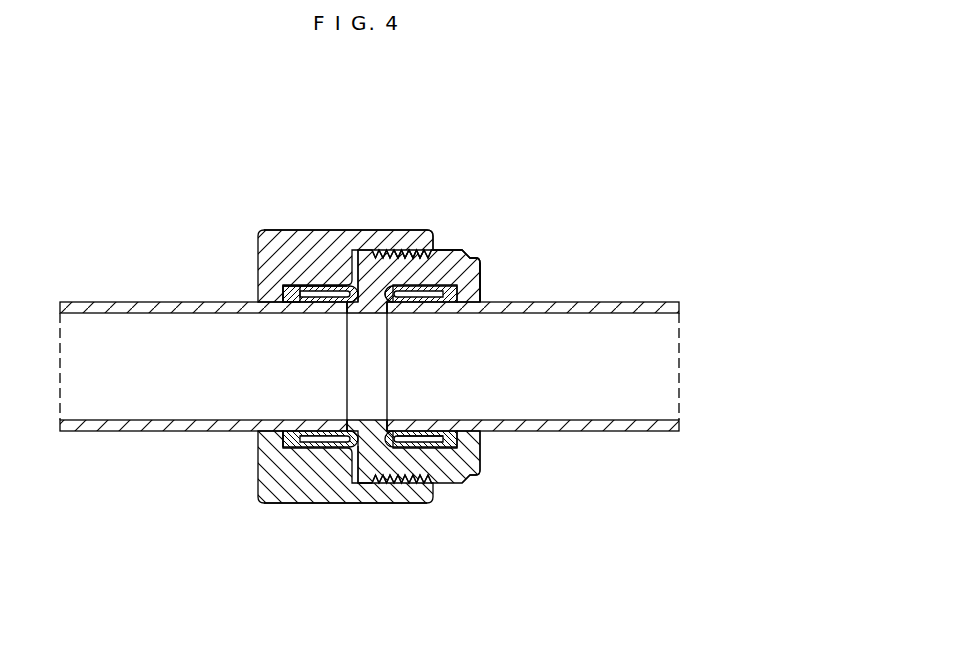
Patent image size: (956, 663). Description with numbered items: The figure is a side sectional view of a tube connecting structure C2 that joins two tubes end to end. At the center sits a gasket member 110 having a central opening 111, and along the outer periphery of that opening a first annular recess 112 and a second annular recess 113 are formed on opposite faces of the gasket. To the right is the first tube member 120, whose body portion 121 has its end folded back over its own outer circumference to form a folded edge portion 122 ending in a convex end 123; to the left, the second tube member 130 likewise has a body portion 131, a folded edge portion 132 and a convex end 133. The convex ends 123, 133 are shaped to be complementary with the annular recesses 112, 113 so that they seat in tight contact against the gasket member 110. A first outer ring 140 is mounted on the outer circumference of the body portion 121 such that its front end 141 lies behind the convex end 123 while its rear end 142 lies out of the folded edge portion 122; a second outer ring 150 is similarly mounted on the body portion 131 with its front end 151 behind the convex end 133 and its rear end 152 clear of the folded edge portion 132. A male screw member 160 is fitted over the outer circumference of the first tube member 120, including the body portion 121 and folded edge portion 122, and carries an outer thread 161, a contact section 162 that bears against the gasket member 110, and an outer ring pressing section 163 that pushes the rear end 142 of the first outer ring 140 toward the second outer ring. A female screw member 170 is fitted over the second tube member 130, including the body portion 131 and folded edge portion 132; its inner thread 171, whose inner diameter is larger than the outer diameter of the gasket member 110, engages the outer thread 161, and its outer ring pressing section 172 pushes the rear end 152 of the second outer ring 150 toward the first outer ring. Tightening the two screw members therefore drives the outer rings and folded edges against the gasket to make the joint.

The gasket member 110 is at (368, 246).
The central opening 111 is at (372, 362).
The first annular recess 112 is at (432, 248).
The second annular recess 113 is at (283, 501).
The first tube member 120 is at (665, 301).
The body portion 121 is at (593, 431).
The folded edge portion 122 is at (412, 447).
The convex end 123 is at (372, 421).
The second tube member 130 is at (122, 301).
The body portion 131 is at (95, 432).
The folded edge portion 132 is at (317, 286).
The convex end 133 is at (365, 313).
The first outer ring 140 is at (455, 448).
The front end 141 is at (392, 302).
The rear end 142 is at (478, 286).
The second outer ring 150 is at (260, 248).
The front end 151 is at (340, 432).
The rear end 152 is at (272, 446).
The male screw member 160 is at (485, 445).
The outer thread 161 is at (418, 248).
The contact section 162 is at (362, 484).
The outer ring pressing section 163 is at (477, 470).
The female screw member 170 is at (258, 272).
The inner thread 171 is at (392, 248).
The outer ring pressing section 172 is at (283, 300).
The connecting structure C2 is at (489, 205).